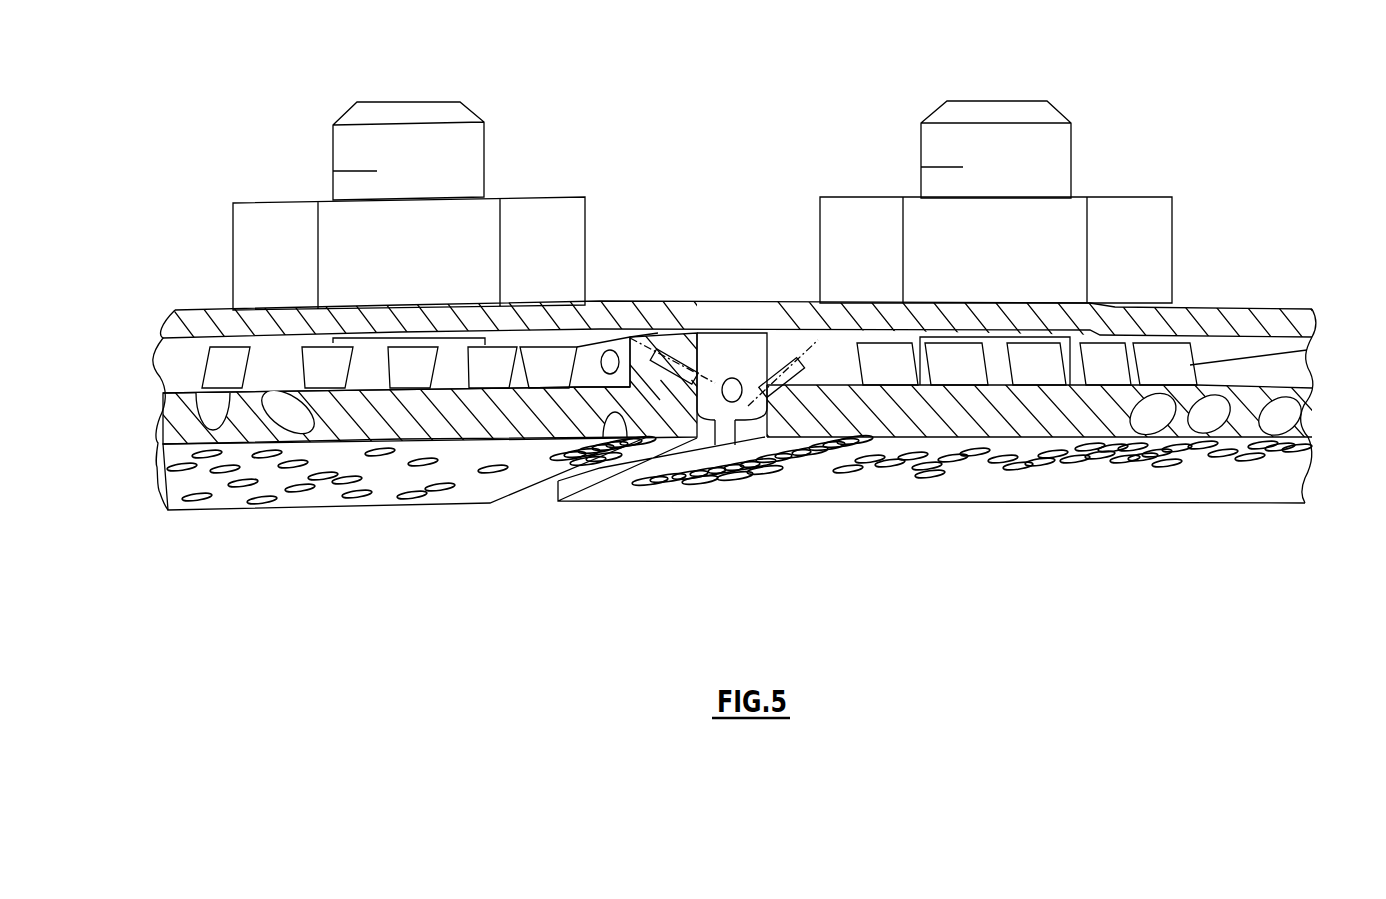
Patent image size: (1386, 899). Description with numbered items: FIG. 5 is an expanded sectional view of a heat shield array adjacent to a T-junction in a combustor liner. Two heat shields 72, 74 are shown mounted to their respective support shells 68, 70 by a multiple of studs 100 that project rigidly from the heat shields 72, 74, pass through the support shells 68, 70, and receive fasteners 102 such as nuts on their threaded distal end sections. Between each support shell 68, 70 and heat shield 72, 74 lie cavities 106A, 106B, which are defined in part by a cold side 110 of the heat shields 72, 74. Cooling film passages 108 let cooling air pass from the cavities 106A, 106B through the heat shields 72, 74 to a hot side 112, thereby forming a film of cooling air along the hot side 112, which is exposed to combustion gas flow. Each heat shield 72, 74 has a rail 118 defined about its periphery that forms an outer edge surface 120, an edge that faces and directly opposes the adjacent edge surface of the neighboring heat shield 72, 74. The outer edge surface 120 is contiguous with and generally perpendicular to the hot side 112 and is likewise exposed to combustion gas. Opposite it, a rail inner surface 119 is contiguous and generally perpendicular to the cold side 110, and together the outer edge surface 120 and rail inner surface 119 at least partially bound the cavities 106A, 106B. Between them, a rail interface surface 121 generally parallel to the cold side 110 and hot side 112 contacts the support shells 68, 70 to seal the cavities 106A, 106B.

The support shell 68 is at (751, 300).
The support shell 70 is at (1295, 318).
The heat shield 72 is at (718, 427).
The heat shield 74 is at (148, 418).
The stud 100 is at (433, 123).
The fastener 102 is at (550, 210).
The cavity 106A is at (766, 306).
The cavity 106B is at (1293, 365).
The cooling film passage 108 is at (1136, 460).
The cold side 110 is at (1224, 394).
The hot side 112 is at (963, 485).
The rail 118 is at (729, 407).
The rail inner surface 119 is at (729, 300).
The outer edge surface 120 is at (711, 415).
The rail interface surface 121 is at (780, 347).